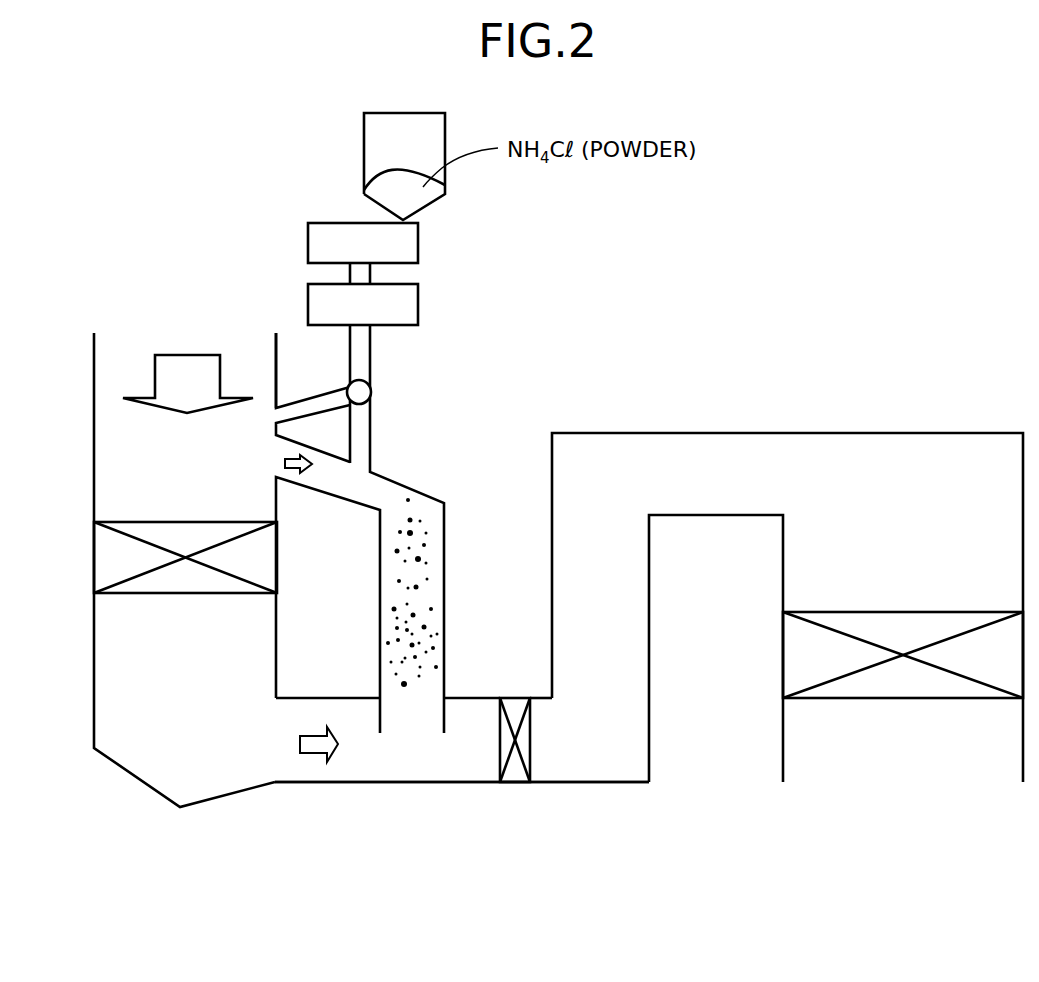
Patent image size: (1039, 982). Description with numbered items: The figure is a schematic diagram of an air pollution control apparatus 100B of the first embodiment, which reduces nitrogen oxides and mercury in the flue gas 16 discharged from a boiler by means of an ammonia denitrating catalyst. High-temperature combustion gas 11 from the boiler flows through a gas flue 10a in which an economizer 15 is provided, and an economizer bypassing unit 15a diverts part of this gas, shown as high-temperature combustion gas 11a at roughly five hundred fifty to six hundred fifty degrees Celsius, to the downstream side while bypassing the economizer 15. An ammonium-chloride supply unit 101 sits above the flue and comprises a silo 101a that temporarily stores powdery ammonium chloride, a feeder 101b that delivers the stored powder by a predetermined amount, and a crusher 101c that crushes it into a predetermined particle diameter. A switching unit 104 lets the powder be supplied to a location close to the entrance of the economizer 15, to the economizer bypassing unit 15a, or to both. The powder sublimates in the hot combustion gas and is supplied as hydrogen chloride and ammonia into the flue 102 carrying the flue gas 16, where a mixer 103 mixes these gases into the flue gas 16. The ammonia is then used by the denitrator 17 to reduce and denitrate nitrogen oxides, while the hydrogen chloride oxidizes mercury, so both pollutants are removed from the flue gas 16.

The air pollution control apparatus 100B is at (828, 163).
The ammonium-chloride supply unit 101 is at (451, 219).
The silo 101a is at (445, 190).
The feeder 101b is at (418, 247).
The crusher 101c is at (418, 305).
The gas flue 10a is at (276, 353).
The switching unit 104 is at (371, 392).
The combustion gas 11 is at (155, 372).
The high-temperature combustion gas 11a is at (295, 476).
The economizer 15 is at (94, 551).
The economizer bypassing unit 15a is at (446, 633).
The flue gas 16 is at (313, 755).
The mixer 103 is at (505, 698).
The flue 102 is at (440, 782).
The denitrator 17 is at (782, 690).